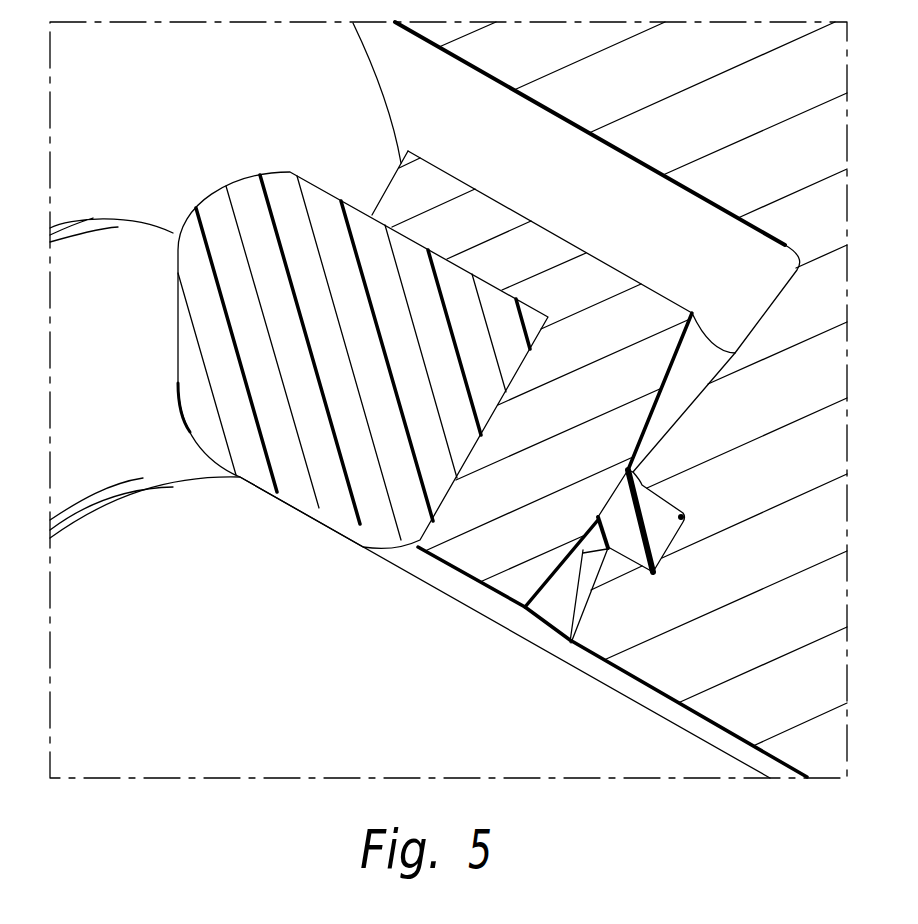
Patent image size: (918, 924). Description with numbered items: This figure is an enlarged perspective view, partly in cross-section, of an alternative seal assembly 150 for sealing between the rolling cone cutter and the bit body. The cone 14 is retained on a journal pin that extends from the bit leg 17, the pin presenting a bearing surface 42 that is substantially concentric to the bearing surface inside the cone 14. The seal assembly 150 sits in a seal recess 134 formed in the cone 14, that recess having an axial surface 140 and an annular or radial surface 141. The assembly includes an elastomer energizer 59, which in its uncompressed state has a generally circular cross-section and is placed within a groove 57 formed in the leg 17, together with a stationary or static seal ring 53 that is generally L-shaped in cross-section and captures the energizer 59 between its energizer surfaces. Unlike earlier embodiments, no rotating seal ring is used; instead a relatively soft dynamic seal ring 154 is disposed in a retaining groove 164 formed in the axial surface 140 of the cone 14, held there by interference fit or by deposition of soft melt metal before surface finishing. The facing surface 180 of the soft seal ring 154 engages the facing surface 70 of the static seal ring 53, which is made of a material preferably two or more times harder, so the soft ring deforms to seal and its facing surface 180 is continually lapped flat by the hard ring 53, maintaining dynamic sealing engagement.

The cone 14 is at (790, 109).
The leg 17 is at (128, 155).
The bearing surface 42 is at (222, 652).
The static seal ring 53 is at (475, 552).
The groove 57 is at (126, 424).
The energizer 59 is at (212, 341).
The facing surface 70 is at (548, 596).
The seal recess 134 is at (525, 122).
The axial surface 140 is at (763, 313).
The radial surface 141 is at (697, 200).
The seal assembly 150 is at (345, 167).
The dynamic seal ring 154 is at (655, 510).
The retaining groove 164 is at (682, 517).
The facing surface 180 is at (608, 502).